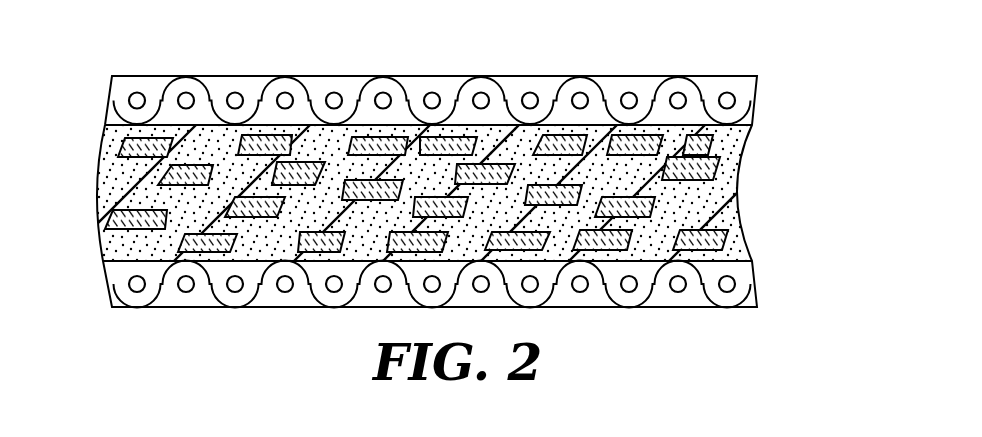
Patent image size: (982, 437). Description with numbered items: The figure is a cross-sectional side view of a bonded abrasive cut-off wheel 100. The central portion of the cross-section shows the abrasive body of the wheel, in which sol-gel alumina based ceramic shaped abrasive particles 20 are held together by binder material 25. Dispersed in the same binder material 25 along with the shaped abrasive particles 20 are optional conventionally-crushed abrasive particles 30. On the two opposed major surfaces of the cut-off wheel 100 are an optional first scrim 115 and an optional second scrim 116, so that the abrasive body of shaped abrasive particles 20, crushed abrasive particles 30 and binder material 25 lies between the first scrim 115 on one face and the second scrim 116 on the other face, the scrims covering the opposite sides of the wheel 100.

The cut-off wheel 100 is at (768, 63).
The first scrim 115 is at (320, 93).
The second scrim 116 is at (210, 278).
The binder material 25 is at (103, 181).
The conventionally-crushed abrasive particles 30 is at (220, 150).
The sol-gel alumina based ceramic shaped abrasive particles 20 is at (625, 147).